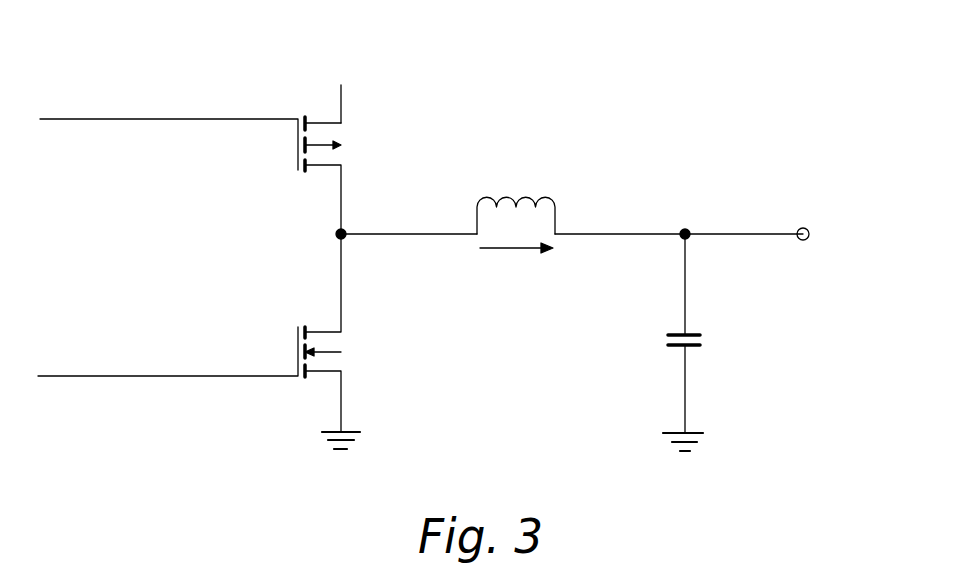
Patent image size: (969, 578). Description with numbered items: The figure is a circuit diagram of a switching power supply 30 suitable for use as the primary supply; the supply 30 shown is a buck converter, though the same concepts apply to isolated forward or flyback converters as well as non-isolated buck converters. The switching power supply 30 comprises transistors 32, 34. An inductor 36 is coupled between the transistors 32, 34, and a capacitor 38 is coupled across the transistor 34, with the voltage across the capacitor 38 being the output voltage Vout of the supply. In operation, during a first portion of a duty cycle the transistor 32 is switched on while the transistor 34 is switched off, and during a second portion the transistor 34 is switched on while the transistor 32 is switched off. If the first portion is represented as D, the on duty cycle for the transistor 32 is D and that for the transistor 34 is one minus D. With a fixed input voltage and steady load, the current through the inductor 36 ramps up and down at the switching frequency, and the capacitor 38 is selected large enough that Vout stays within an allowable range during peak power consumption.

The switching power supply 30 is at (663, 106).
The transistor 32 is at (322, 168).
The transistor 34 is at (246, 377).
The inductor 36 is at (558, 218).
The capacitor 38 is at (662, 342).